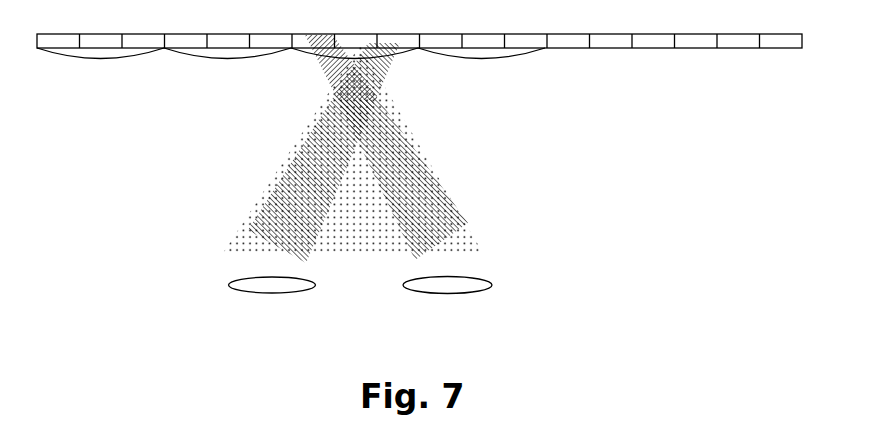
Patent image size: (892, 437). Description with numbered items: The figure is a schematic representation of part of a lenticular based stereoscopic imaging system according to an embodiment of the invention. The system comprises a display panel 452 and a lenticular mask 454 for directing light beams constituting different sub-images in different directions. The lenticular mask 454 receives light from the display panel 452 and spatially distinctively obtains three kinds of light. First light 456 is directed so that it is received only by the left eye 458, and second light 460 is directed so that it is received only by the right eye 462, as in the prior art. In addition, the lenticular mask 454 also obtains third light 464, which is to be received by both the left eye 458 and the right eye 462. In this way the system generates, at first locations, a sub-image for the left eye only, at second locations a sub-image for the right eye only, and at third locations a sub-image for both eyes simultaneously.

The display panel 452 is at (597, 53).
The lenticular mask 454 is at (493, 53).
The first light 456 is at (290, 205).
The left eye 458 is at (268, 293).
The second light 460 is at (423, 207).
The right eye 462 is at (438, 295).
The third light 464 is at (352, 268).